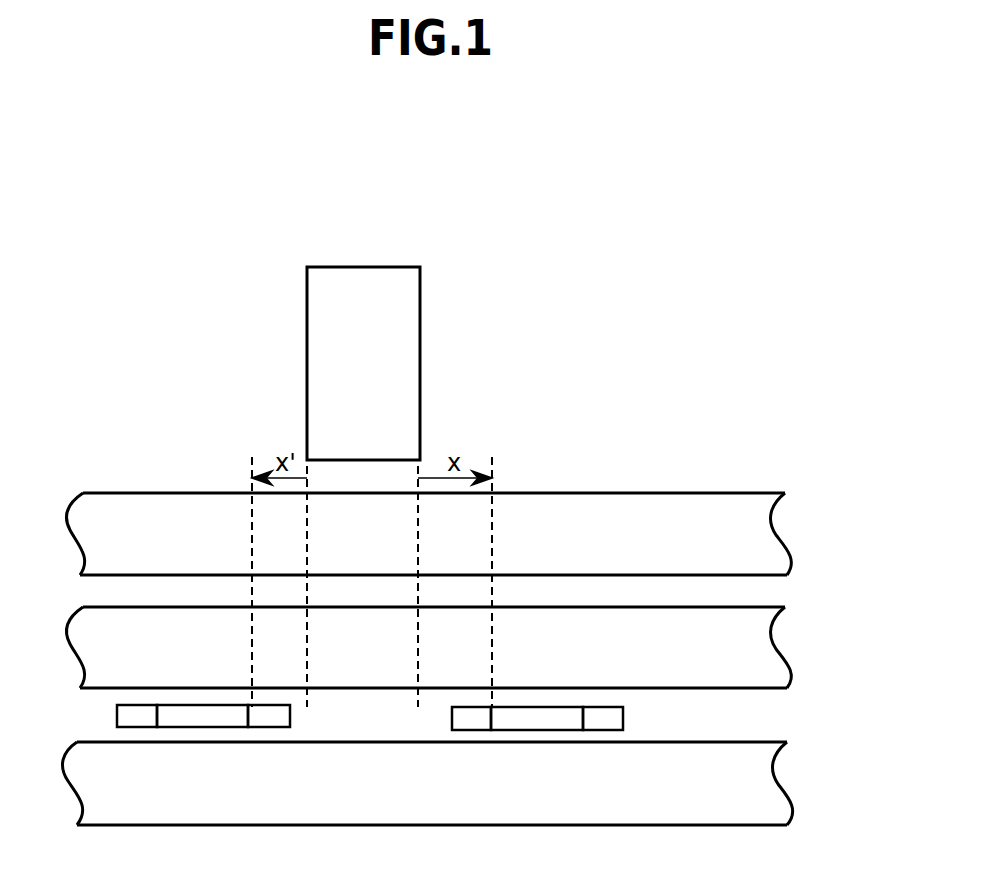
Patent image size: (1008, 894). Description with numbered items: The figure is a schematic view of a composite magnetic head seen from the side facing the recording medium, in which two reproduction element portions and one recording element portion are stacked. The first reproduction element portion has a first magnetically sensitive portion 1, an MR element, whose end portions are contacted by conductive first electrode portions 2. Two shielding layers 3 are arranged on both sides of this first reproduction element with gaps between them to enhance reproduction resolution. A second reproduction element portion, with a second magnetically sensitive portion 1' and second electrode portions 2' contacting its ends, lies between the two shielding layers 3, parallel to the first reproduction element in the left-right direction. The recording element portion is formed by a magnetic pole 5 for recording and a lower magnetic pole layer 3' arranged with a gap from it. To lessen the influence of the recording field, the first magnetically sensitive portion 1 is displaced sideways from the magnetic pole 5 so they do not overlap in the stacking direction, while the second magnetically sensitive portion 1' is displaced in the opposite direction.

The first magnetically sensitive portion 1 is at (530, 798).
The second magnetically sensitive portion 1' is at (191, 797).
The first electrode portions 2 is at (519, 798).
The second electrode portions 2' is at (180, 797).
The shielding layers 3 is at (460, 716).
The lower magnetic pole layer 3' is at (462, 534).
The magnetic pole 5 is at (392, 293).